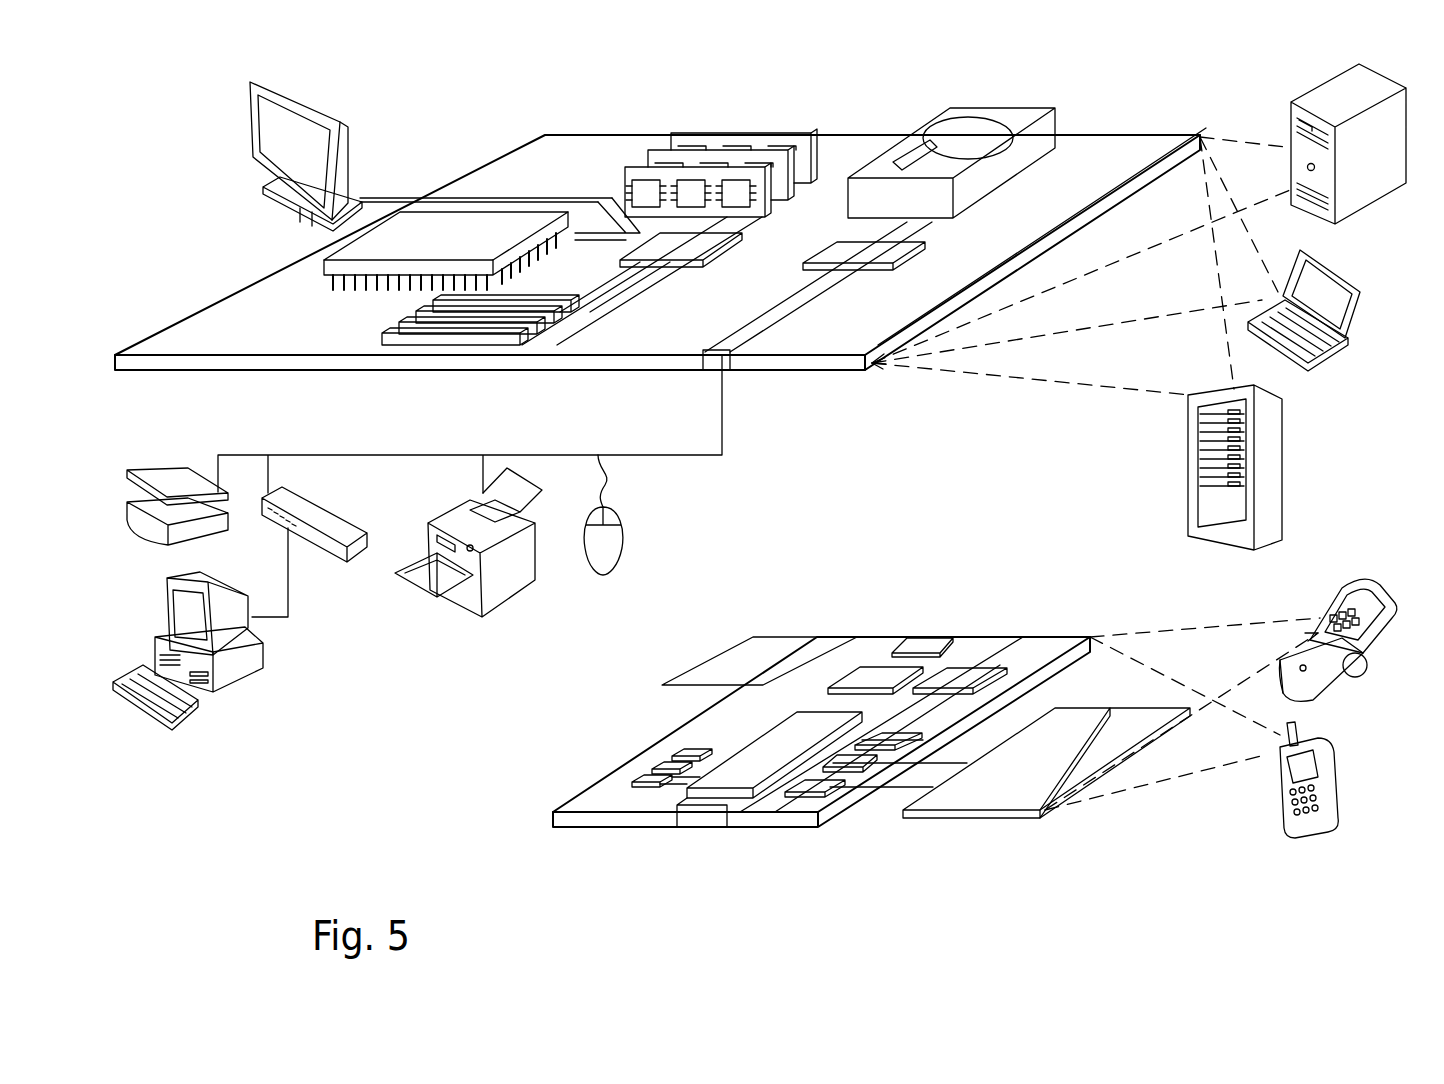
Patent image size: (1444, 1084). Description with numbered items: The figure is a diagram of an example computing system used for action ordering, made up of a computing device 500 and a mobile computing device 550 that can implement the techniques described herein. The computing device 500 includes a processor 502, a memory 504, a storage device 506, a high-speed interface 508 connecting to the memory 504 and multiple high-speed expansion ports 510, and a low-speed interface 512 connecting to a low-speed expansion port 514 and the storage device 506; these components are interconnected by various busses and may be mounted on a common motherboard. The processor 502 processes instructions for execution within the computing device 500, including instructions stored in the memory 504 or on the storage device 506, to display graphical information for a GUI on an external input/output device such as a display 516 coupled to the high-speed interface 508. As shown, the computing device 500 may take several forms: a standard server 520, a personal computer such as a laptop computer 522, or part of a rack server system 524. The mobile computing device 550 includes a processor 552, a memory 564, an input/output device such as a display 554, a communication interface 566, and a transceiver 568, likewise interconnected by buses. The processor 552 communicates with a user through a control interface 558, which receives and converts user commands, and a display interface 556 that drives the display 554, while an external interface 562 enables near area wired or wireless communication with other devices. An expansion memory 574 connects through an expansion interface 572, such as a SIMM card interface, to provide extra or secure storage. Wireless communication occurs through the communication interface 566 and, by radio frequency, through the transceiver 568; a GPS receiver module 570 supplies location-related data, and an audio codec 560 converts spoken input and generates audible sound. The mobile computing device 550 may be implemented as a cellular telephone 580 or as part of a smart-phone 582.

The computing device 500 is at (466, 107).
The processor 502 is at (324, 264).
The memory 504 is at (683, 125).
The storage device 506 is at (935, 150).
The high-speed interface 508 is at (643, 247).
The high-speed expansion ports 510 is at (400, 325).
The low-speed interface 512 is at (850, 252).
The low-speed expansion port 514 is at (735, 358).
The display 516 is at (250, 80).
The standard server 520 is at (1291, 122).
The laptop computer 522 is at (1358, 284).
The rack server system 524 is at (1190, 496).
The mobile computing device 550 is at (525, 822).
The processor 552 is at (745, 777).
The display 554 is at (1003, 795).
The display interface 556 is at (818, 790).
The control interface 558 is at (852, 768).
The audio codec 560 is at (885, 737).
The external interface 562 is at (707, 810).
The memory 564 is at (655, 772).
The communication interface 566 is at (875, 676).
The transceiver 568 is at (960, 678).
The GPS receiver module 570 is at (932, 637).
The expansion interface 572 is at (797, 648).
The expansion memory 574 is at (700, 684).
The cellular telephone 580 is at (1322, 612).
The smart-phone 582 is at (1277, 783).